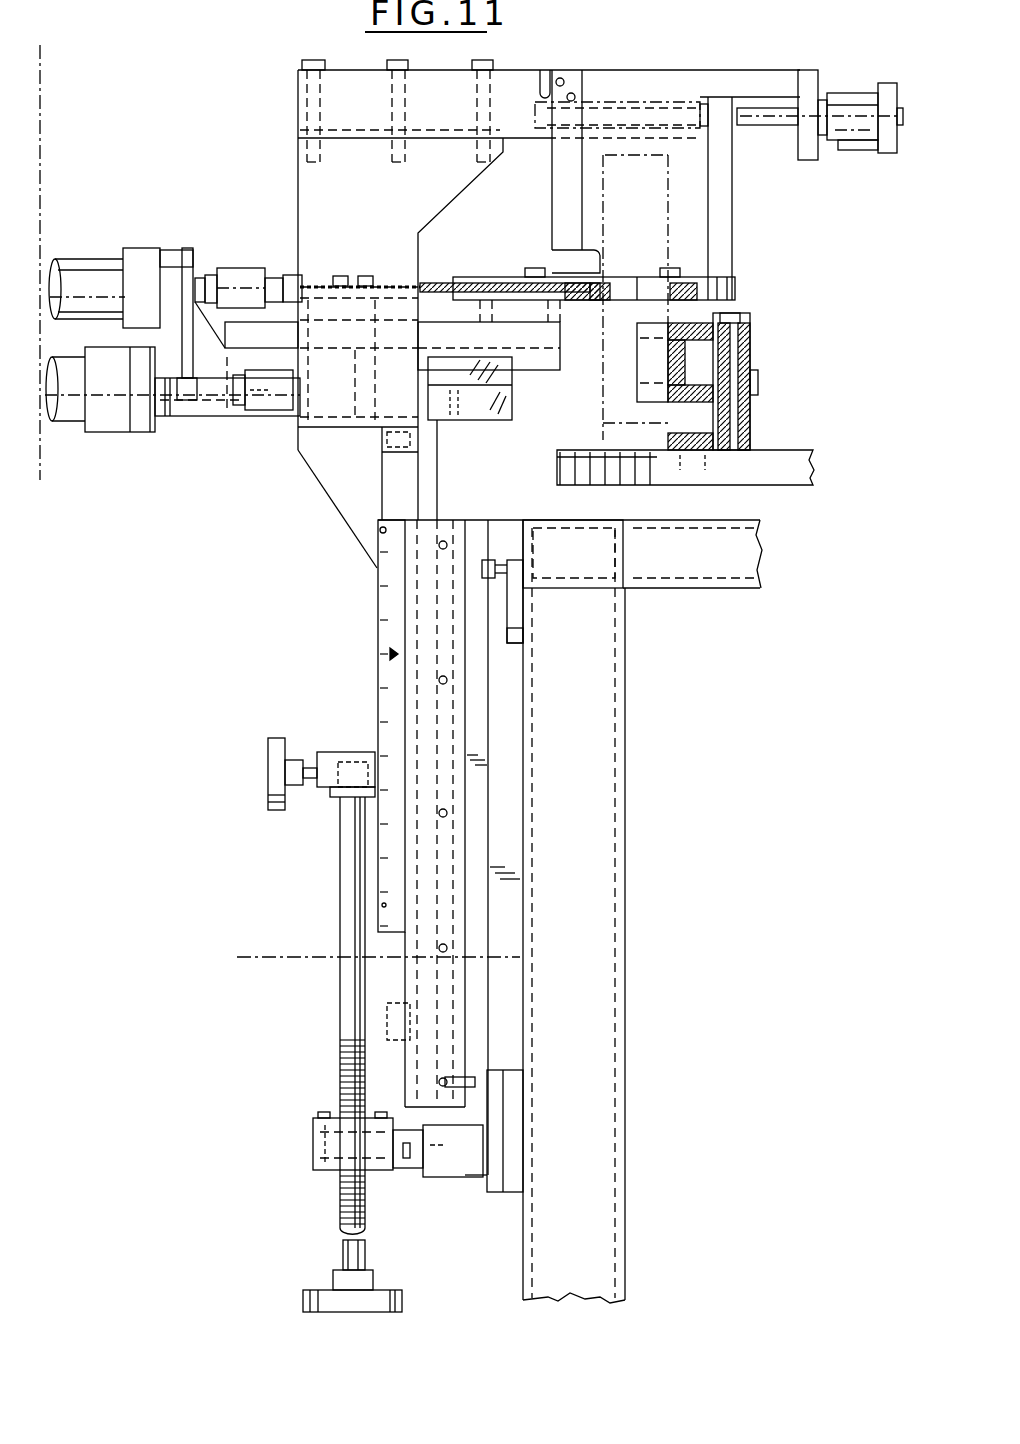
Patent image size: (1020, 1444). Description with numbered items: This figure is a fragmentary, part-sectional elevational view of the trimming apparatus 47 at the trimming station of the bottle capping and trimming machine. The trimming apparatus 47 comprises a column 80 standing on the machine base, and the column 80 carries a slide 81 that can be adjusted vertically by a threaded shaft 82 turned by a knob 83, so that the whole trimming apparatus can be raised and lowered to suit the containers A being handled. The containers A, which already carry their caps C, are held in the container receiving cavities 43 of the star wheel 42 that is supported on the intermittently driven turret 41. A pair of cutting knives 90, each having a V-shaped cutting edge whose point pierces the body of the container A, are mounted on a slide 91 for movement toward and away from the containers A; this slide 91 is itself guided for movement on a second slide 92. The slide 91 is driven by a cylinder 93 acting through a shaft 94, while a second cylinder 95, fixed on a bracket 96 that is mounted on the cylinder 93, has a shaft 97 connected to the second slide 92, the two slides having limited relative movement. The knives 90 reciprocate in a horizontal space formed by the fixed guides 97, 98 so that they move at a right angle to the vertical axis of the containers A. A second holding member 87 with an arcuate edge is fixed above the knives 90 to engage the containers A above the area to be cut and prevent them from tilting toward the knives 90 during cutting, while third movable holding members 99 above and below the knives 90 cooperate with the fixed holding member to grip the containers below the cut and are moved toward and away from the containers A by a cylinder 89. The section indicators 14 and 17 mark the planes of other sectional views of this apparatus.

The section line 14- 14 is at (40, 58).
The section line 17- 17 is at (258, 968).
The turret 41 is at (778, 441).
The star wheel 42 is at (750, 366).
The container receiving cavities 43 is at (648, 352).
The trimming apparatus 47 is at (650, 682).
The column 80 is at (600, 815).
The slide 81 is at (392, 490).
The threaded shaft 82 is at (340, 1090).
The knob 83 is at (402, 1303).
The second holding member 87 is at (562, 262).
The cylinder 89 is at (858, 135).
The cutting knives 90 is at (466, 277).
The slide 91 is at (540, 347).
The second slide 92 is at (468, 420).
The cylinder 93 is at (140, 262).
The shaft 94 is at (205, 280).
The second cylinder 95 is at (122, 405).
The bracket 96 is at (192, 353).
The shaft 97 is at (575, 280).
The fixed guide 98 is at (588, 302).
The third movable holding members 99 is at (650, 278).
The containers A is at (668, 238).
The caps C is at (603, 432).